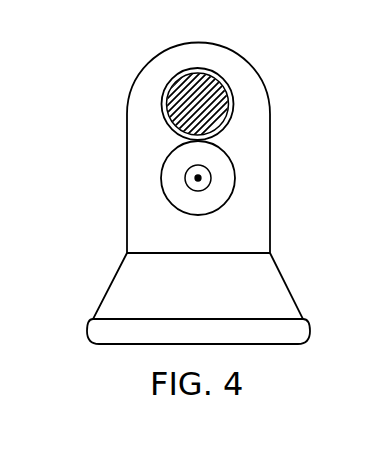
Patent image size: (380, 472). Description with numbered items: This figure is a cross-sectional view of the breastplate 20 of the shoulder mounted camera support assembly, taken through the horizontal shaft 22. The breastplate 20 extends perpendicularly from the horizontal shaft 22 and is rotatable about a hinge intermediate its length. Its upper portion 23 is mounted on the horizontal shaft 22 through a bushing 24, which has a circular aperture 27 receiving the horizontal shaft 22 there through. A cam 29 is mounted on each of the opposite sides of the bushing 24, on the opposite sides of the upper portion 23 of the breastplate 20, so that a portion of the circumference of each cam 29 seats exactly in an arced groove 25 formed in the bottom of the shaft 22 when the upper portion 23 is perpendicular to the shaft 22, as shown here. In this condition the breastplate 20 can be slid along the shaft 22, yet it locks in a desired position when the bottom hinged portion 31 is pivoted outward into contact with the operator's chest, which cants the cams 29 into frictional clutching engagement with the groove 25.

The breastplate 20 is at (100, 257).
The horizontal shaft 22 is at (176, 96).
The upper portion 23 is at (223, 50).
The bushing 24 is at (232, 81).
The groove 25 is at (207, 140).
The circular aperture 27 is at (162, 112).
The cam 29 is at (235, 183).
The bottom hinged portion 31 is at (263, 289).